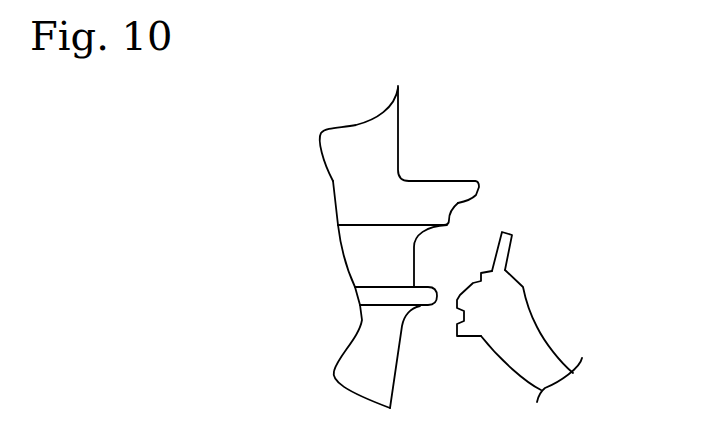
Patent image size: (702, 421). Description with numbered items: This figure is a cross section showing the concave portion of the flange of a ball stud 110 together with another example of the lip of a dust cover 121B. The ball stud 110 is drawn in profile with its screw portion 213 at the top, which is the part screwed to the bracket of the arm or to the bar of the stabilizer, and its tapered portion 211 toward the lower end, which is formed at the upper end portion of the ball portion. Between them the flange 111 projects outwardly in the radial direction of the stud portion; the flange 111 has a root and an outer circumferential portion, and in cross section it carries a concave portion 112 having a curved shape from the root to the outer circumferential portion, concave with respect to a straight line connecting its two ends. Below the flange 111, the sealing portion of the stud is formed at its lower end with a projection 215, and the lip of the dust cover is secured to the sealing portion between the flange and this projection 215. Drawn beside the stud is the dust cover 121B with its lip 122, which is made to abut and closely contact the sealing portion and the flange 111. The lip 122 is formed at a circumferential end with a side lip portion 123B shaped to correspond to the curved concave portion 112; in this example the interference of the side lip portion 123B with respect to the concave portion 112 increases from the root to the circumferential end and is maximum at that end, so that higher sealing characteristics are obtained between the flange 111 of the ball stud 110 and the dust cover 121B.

The ball stud 110 is at (434, 95).
The screw portion 213 is at (399, 137).
The flange 111 is at (362, 200).
The concave portion 112 is at (458, 203).
The projection 215 is at (368, 295).
The tapered portion 211 is at (378, 372).
The dust cover 121B is at (551, 302).
The side lip portion 123B is at (502, 254).
The lip 122 is at (465, 302).